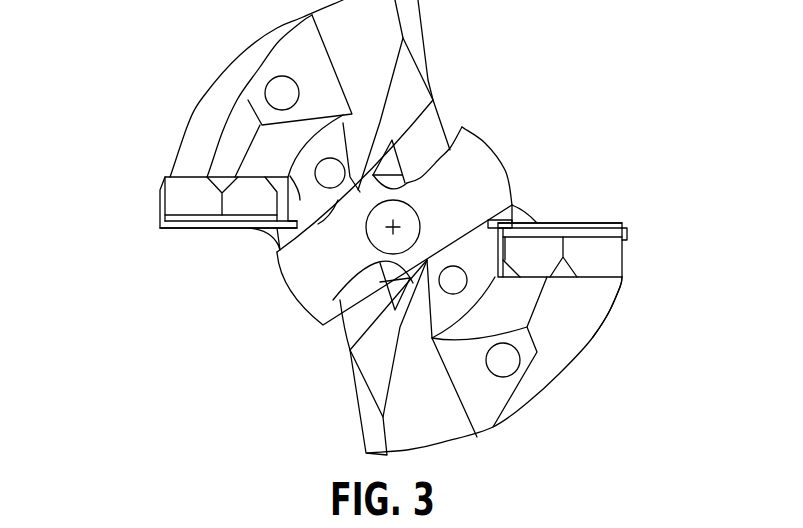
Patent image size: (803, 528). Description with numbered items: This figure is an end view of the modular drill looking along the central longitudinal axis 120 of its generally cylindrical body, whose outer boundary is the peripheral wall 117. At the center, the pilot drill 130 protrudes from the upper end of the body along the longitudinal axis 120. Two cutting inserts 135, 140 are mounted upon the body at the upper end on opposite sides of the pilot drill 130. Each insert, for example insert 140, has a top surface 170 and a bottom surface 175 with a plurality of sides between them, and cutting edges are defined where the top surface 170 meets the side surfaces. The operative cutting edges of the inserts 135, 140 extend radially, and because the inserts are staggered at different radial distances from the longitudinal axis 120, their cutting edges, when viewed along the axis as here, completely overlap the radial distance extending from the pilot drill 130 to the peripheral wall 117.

The peripheral wall 117 is at (223, 72).
The central longitudinal axis 120 is at (393, 227).
The pilot drill 130 is at (306, 305).
The cutting insert 135 is at (160, 200).
The cutting insert 140 is at (598, 257).
The top surface 170 is at (198, 230).
The bottom surface 175 is at (587, 270).